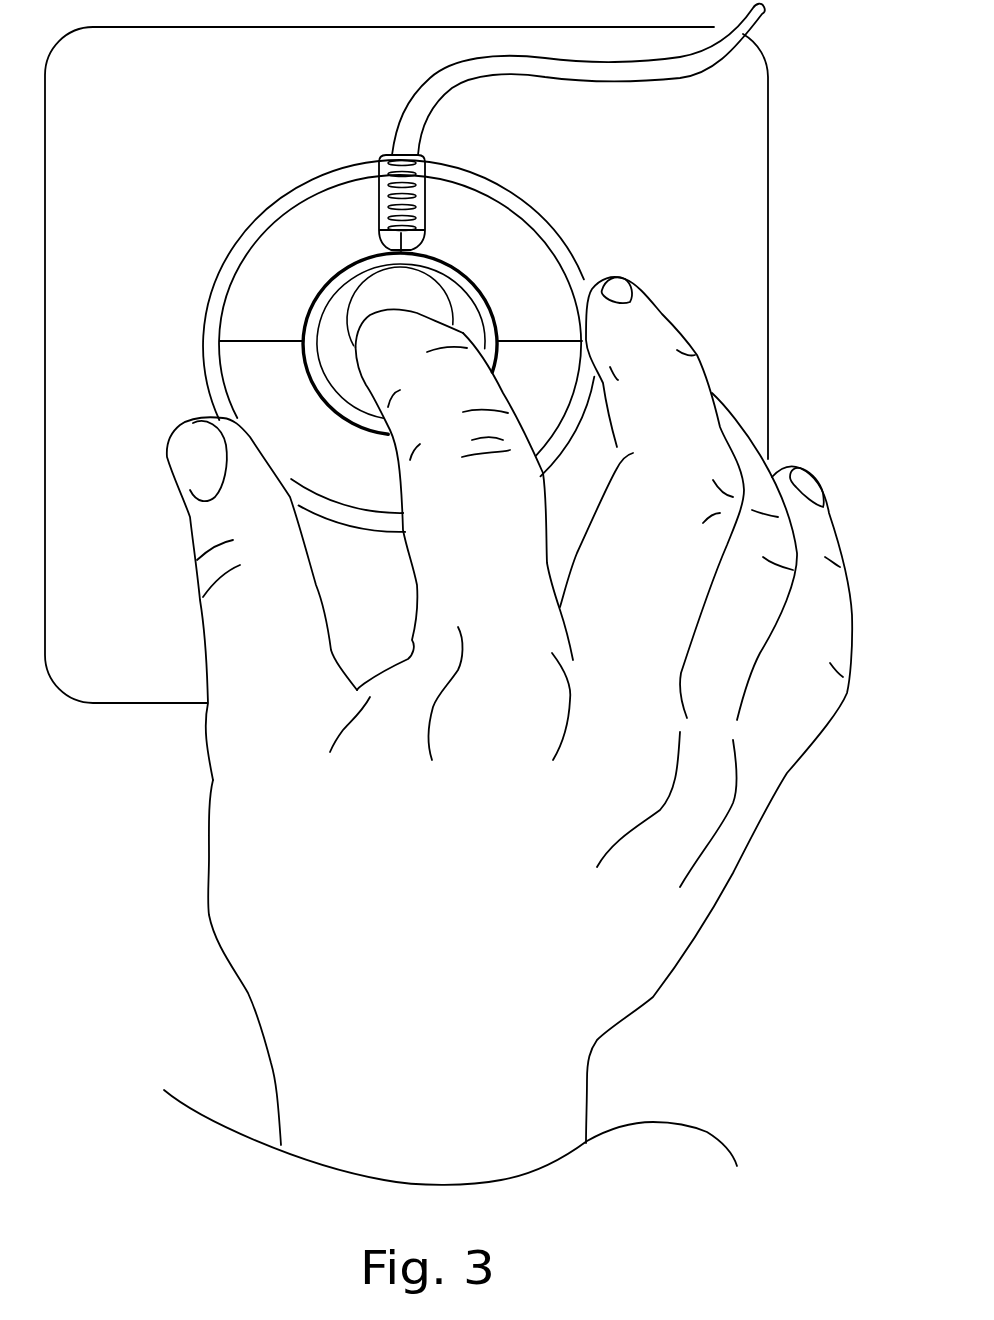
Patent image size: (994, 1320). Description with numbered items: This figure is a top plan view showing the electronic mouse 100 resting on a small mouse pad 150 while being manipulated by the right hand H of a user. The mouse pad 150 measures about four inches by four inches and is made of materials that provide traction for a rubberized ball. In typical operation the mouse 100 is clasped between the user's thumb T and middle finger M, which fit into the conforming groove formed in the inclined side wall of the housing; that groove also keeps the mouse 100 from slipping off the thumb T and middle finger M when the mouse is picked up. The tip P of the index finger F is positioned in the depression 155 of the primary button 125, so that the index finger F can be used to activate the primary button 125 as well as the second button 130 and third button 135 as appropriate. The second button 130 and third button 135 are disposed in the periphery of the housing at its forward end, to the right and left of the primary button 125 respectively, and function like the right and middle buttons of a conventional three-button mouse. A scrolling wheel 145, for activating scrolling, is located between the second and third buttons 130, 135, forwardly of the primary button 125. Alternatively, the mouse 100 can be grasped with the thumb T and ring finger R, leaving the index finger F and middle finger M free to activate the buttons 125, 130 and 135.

The electronic mouse 100 is at (434, 268).
The primary button 125 is at (492, 268).
The second button 130 is at (293, 237).
The third button 135 is at (548, 290).
The scrolling wheel 145 is at (382, 170).
The mouse pad 150 is at (789, 236).
The depression 155 is at (390, 297).
The hand H is at (474, 700).
The thumb T is at (177, 587).
The index finger F is at (345, 484).
The tip of the index finger P is at (390, 327).
The middle finger M is at (687, 304).
The ring finger R is at (751, 391).